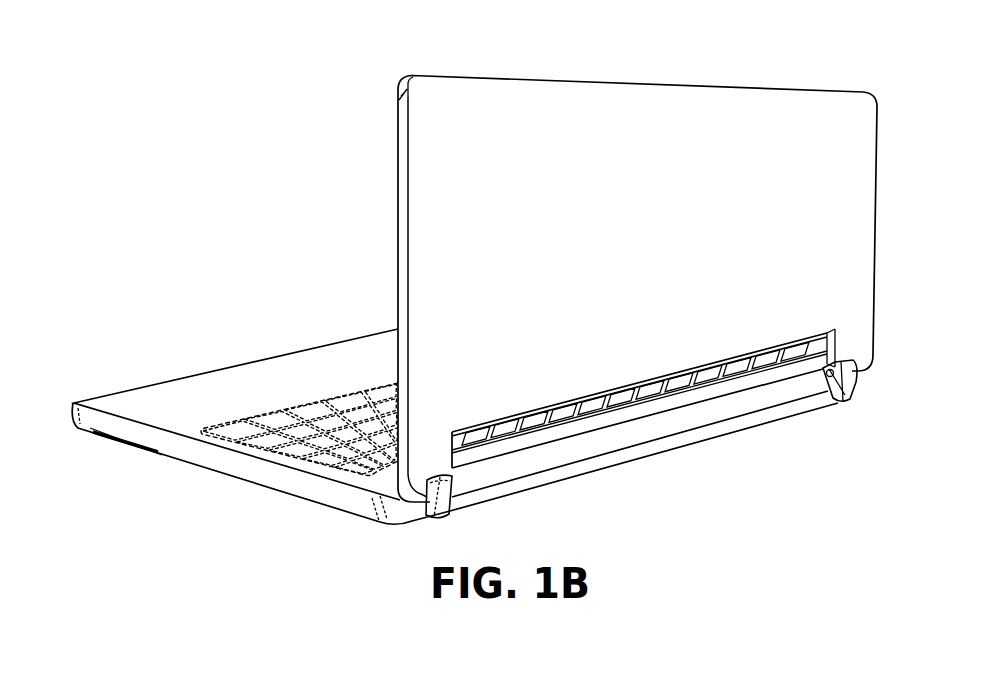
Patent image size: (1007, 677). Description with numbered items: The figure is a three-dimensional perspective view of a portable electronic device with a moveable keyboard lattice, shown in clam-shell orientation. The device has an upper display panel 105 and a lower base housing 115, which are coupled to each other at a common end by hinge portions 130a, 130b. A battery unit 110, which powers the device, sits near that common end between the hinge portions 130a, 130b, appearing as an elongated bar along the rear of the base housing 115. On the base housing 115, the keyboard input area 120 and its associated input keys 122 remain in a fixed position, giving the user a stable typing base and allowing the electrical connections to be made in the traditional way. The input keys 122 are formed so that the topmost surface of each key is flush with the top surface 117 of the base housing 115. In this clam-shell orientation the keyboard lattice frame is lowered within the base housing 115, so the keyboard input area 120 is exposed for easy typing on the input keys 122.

The upper display panel 105 is at (423, 202).
The battery unit 110 is at (736, 422).
The lower base housing 115 is at (124, 397).
The top surface of the base housing 117 is at (258, 365).
The keyboard input area 120 is at (299, 420).
The input keys 122 is at (341, 403).
The hinge portion 130a is at (436, 497).
The hinge portion 130b is at (842, 384).